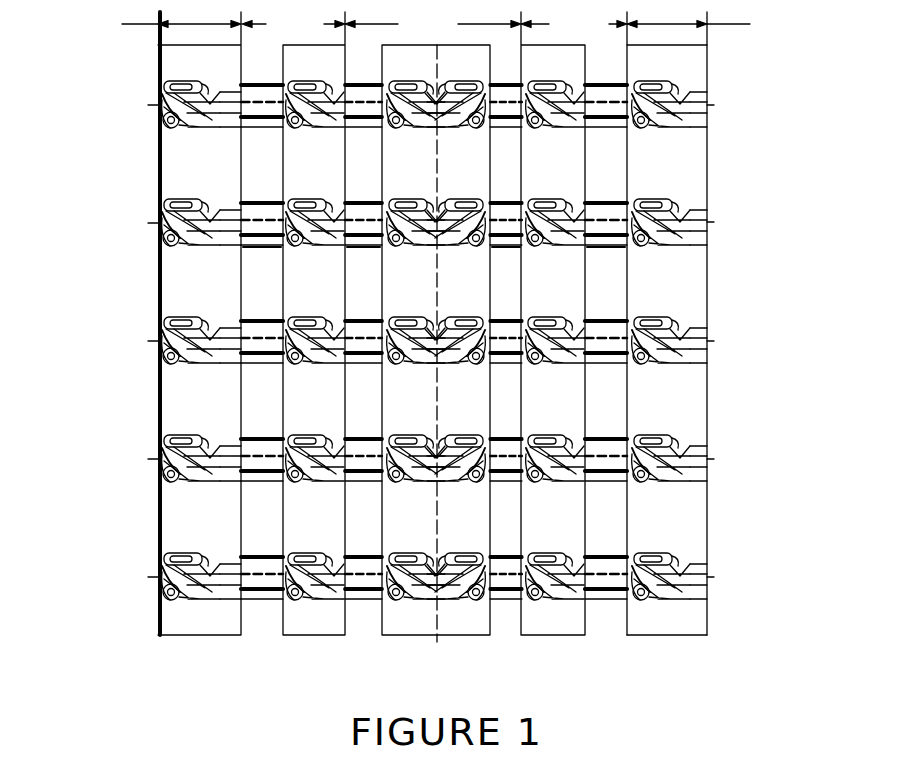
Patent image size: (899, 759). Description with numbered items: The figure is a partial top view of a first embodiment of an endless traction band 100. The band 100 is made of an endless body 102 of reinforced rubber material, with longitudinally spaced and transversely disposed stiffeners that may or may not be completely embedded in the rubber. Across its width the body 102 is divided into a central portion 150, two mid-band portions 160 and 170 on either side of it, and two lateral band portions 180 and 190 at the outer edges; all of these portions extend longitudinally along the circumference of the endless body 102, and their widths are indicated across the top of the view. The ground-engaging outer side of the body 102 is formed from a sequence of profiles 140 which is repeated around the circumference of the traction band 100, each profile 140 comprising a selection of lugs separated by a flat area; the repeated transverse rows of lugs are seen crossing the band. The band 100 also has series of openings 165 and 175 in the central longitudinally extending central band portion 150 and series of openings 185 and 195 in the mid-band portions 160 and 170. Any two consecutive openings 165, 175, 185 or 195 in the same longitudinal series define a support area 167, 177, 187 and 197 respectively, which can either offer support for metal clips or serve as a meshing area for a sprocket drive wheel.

The endless traction band 100 is at (102, 440).
The endless body 102 is at (673, 405).
The profile 140 is at (713, 353).
The central portion 150 is at (433, 326).
The mid-band portion 160 is at (293, 323).
The opening 165 is at (360, 167).
The support area 167 is at (363, 243).
The mid-band portion 170 is at (574, 323).
The opening 175 is at (503, 173).
The support area 177 is at (500, 242).
The lateral band portion 180 is at (153, 323).
The opening 185 is at (253, 168).
The support area 187 is at (262, 283).
The lateral band portion 190 is at (716, 323).
The opening 195 is at (606, 172).
The support area 197 is at (603, 243).